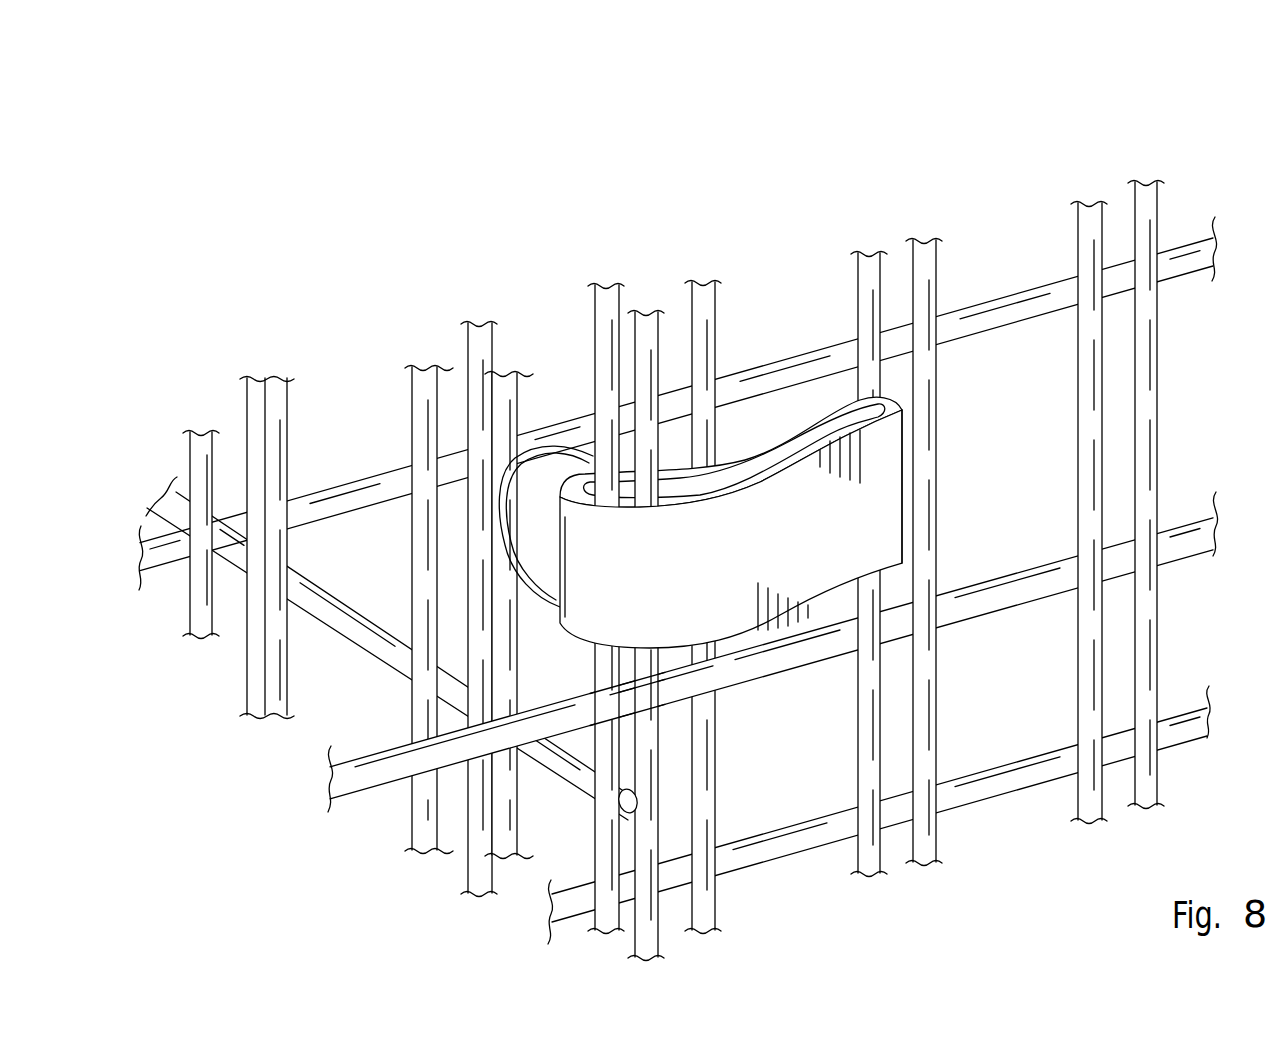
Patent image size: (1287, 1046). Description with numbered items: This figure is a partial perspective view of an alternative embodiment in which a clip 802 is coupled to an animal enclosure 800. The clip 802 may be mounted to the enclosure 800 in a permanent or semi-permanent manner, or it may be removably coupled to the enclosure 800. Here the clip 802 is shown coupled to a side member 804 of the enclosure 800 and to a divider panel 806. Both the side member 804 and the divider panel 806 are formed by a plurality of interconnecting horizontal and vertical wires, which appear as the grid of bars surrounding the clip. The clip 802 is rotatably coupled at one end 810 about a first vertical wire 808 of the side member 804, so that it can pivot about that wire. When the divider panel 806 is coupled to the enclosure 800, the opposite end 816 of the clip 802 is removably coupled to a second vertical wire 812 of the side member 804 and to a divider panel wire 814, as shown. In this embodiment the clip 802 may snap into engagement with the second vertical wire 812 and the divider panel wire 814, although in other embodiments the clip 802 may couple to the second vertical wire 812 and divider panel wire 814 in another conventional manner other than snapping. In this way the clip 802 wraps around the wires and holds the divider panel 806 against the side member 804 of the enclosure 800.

The animal enclosure 800 is at (678, 498).
The clip 802 is at (801, 572).
The side member 804 is at (1007, 592).
The divider panel 806 is at (284, 397).
The first vertical wire 808 is at (862, 275).
The one end 810 is at (907, 475).
The second vertical wire 812 is at (645, 318).
The divider panel wire 814 is at (598, 307).
The opposite end 816 is at (553, 627).